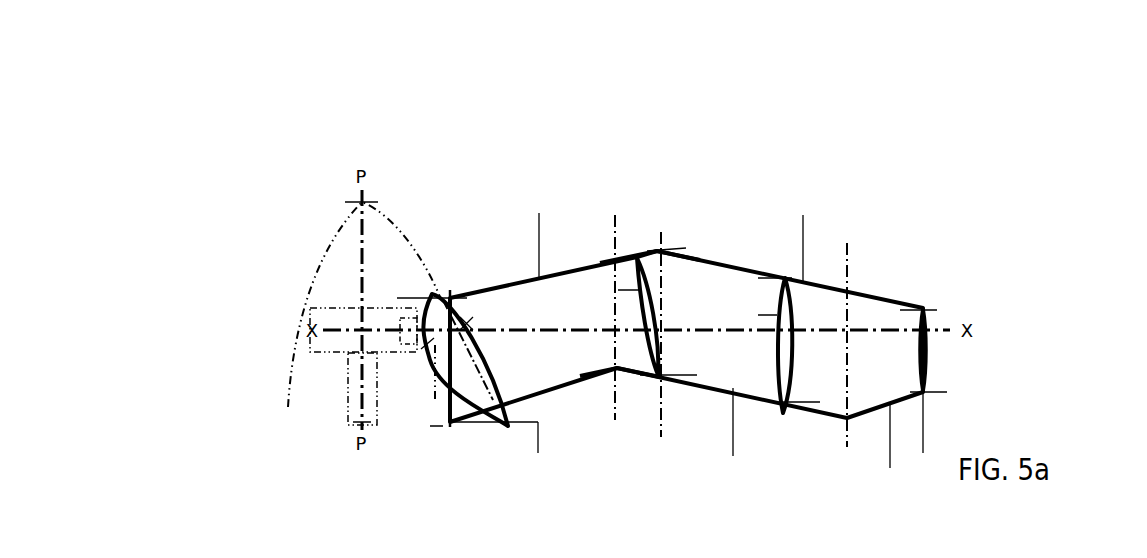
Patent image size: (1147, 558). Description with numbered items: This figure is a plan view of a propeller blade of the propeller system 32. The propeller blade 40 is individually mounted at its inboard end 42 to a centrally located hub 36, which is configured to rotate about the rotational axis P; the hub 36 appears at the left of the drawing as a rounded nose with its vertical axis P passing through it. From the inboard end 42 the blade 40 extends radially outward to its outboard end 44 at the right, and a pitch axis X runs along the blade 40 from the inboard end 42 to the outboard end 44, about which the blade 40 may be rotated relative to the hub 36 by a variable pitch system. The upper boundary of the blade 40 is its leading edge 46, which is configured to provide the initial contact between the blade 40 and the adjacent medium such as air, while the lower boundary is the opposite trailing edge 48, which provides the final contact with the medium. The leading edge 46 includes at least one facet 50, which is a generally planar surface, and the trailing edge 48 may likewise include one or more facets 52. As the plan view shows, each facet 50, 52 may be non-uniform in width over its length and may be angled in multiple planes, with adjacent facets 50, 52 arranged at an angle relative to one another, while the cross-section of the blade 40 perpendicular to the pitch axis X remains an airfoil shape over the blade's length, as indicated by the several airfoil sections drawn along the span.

The propeller system 32 is at (156, 160).
The hub 36 is at (300, 293).
The propeller blade 40 is at (993, 233).
The inboard end 42 is at (440, 300).
The outboard end 44 is at (923, 352).
The leading edge 46 is at (672, 253).
The trailing edge 48 is at (640, 378).
The facet 50 is at (667, 231).
The facet 52 is at (676, 444).